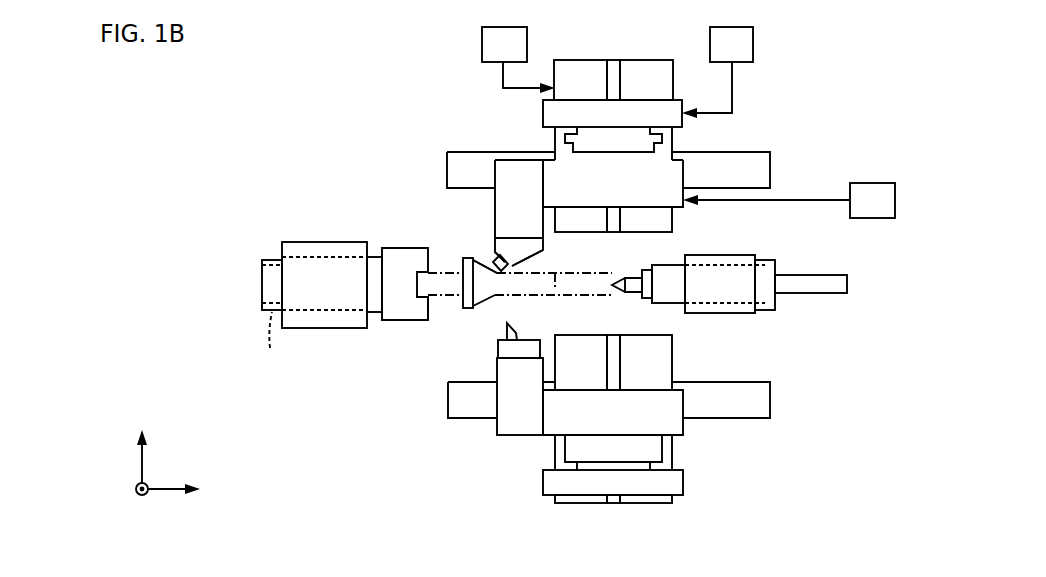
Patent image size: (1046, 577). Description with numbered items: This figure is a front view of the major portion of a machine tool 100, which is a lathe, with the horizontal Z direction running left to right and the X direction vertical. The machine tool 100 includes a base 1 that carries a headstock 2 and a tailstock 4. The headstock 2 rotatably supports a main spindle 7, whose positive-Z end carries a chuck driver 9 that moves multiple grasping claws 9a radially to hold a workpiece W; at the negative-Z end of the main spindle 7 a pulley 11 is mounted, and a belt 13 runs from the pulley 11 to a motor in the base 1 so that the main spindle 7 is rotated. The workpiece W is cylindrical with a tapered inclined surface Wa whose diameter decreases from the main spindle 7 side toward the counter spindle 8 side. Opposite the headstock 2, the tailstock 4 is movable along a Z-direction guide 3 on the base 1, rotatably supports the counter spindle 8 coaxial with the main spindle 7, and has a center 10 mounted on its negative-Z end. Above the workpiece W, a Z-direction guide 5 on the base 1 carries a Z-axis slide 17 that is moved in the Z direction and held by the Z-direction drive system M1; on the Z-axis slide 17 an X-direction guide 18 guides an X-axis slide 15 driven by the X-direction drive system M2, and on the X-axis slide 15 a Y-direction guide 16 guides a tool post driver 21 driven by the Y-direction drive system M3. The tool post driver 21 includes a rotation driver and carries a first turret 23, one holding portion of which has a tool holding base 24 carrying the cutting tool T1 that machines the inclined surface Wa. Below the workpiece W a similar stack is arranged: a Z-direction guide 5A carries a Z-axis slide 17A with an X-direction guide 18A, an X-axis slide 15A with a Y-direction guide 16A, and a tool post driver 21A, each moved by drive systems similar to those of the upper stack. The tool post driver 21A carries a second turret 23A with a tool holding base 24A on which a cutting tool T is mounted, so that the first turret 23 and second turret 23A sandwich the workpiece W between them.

The machine tool 100 is at (802, 28).
The base 1 is at (422, 102).
The headstock 2 is at (310, 242).
The main spindle 7 is at (373, 262).
The chuck driver 9 is at (400, 257).
The grasping claws 9a is at (423, 318).
The belt 13 is at (272, 260).
The pulley 11 is at (270, 345).
The cutting tool T1 is at (494, 263).
The cutting tool T is at (512, 335).
The workpiece W is at (456, 325).
The inclined surface Wa is at (491, 301).
The first turret 23 is at (508, 167).
The tool holding base 24 is at (540, 250).
The second turret 23A is at (505, 440).
The tool holding base 24A is at (507, 345).
The X-axis slide 15 is at (663, 107).
The Y-direction guide 16 is at (631, 136).
The Z-axis slide 17 is at (563, 67).
The X-direction guide 18 is at (613, 67).
The tool post driver 21 is at (675, 170).
The Z-direction guide 5 is at (763, 170).
The X-axis slide 15A is at (678, 485).
The Y-direction guide 16A is at (637, 460).
The Z-axis slide 17A is at (563, 503).
The X-direction guide 18A is at (613, 503).
The tool post driver 21A is at (677, 428).
The Z-direction guide 5A is at (770, 400).
The tailstock 4 is at (717, 260).
The Z-direction guide 3 is at (838, 283).
The counter spindle 8 is at (675, 299).
The center 10 is at (635, 292).
The Z-direction drive system M1 is at (518, 60).
The X-direction drive system M2 is at (717, 72).
The Y-direction drive system M3 is at (789, 200).